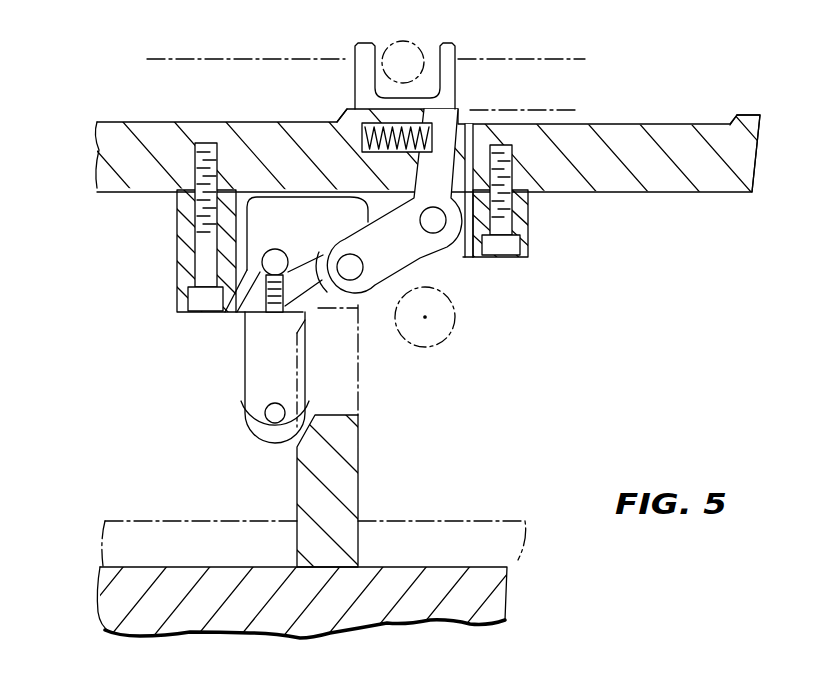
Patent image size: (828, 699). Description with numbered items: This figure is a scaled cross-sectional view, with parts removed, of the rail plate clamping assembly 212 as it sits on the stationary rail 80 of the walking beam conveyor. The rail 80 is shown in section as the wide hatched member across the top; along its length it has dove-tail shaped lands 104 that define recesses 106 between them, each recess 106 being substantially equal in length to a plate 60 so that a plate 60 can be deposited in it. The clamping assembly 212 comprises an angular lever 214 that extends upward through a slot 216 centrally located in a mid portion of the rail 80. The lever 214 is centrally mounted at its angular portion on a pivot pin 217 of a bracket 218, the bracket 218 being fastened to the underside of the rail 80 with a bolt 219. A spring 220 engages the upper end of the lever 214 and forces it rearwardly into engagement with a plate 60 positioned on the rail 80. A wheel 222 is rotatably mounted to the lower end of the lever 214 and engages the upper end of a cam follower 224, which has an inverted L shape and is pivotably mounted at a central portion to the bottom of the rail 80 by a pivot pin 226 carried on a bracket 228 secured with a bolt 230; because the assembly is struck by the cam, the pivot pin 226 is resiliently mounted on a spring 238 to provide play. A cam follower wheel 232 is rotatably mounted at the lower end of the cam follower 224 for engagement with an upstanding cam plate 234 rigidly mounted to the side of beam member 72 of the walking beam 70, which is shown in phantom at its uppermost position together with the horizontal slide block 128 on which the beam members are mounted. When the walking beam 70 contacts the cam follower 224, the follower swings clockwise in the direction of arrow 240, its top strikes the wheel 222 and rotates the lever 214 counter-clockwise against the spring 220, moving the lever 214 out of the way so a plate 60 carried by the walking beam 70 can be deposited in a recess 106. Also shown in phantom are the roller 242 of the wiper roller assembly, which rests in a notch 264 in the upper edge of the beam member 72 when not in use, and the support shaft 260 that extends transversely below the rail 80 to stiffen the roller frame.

The plate 60 is at (578, 108).
The walking beam 70 is at (229, 57).
The beam member 72 is at (575, 58).
The rail 80 is at (123, 121).
The land 104 is at (753, 114).
The recess 106 is at (683, 119).
The horizontal slide block 128 is at (468, 567).
The rail plate clamping assembly 212 is at (330, 97).
The angular lever 214 is at (426, 203).
The slot 216 is at (473, 124).
The pivot pin 217 is at (437, 222).
The bracket 218 is at (530, 213).
The bolt 219 is at (530, 248).
The spring 220 is at (370, 124).
The wheel 222 is at (372, 298).
The cam follower 224 is at (246, 362).
The pivot pin 226 is at (280, 250).
The bracket 228 is at (180, 240).
The bolt 230 is at (195, 204).
The cam follower wheel 232 is at (263, 455).
The cam plate 234 is at (292, 518).
The spring 238 is at (267, 315).
The arrow 240 is at (219, 404).
The roller 242 is at (408, 40).
The support shaft 260 is at (447, 337).
The notch 264 is at (442, 45).